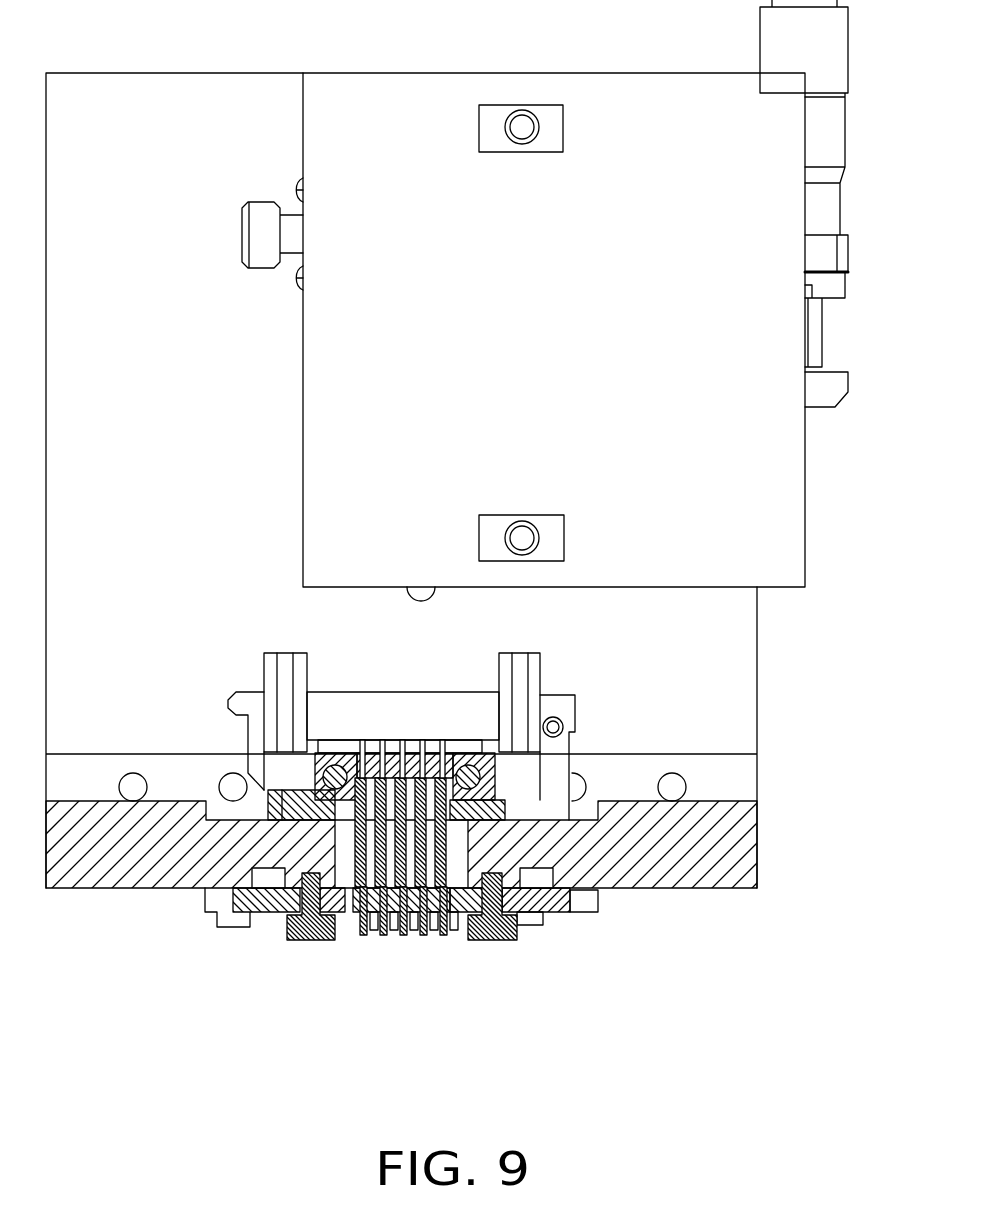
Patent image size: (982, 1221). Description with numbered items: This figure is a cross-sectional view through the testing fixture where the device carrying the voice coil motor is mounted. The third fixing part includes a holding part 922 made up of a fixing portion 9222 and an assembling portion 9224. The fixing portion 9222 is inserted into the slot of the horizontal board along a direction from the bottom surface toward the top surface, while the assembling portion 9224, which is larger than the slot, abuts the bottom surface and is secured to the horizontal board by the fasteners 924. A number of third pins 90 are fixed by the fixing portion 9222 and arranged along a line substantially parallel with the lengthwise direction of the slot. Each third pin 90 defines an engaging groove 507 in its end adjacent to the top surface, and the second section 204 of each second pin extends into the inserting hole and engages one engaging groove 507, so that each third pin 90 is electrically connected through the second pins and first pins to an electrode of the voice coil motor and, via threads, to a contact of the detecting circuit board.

The second section 204 is at (468, 823).
The engaging groove 507 is at (337, 822).
The third pin 90 is at (447, 913).
The holding part 922 is at (405, 1038).
The fixing portion 9222 is at (372, 913).
The assembling portion 9224 is at (258, 917).
The fastener 924 is at (500, 943).